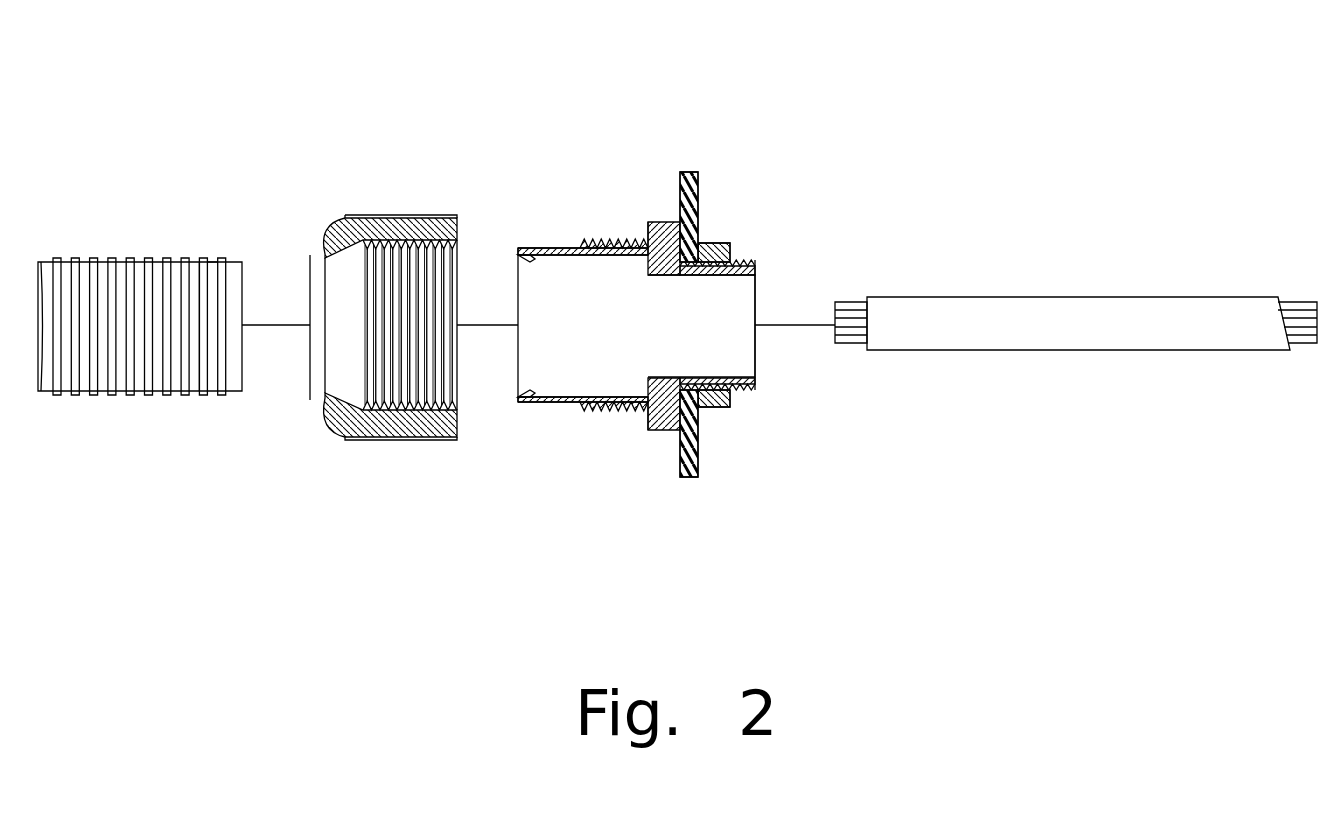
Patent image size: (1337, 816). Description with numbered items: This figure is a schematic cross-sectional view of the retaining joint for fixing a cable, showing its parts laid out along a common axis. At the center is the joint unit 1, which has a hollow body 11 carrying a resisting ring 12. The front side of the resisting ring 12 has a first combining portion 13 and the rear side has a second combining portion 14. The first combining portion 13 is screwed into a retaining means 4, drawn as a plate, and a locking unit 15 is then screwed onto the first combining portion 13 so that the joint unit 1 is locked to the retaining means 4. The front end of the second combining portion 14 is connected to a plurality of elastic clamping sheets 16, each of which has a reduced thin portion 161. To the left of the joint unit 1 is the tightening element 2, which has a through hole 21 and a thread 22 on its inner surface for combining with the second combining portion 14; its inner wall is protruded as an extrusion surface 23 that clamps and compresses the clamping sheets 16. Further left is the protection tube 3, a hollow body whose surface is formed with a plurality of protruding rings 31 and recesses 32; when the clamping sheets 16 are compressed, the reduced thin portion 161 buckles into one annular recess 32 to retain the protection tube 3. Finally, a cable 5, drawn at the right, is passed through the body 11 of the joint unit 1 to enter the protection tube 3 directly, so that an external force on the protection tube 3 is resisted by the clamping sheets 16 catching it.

The joint unit 1 is at (636, 256).
The hollow body 11 is at (659, 202).
The resisting ring 12 is at (660, 222).
The first combining portion 13 is at (748, 259).
The second combining portion 14 is at (612, 412).
The locking unit 15 is at (716, 405).
The elastic clamping sheets 16 is at (540, 249).
The reduced thin portion 161 is at (530, 398).
The tightening element 2 is at (387, 255).
The through hole 21 is at (455, 258).
The thread 22 is at (315, 272).
The extrusion surface 23 is at (352, 216).
The protection tube 3 is at (137, 226).
The protruding rings 31 is at (208, 262).
The recesses 32 is at (218, 262).
The retaining means 4 is at (696, 195).
The cable 5 is at (1078, 295).